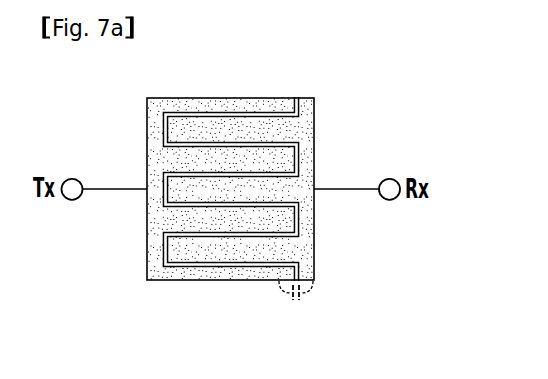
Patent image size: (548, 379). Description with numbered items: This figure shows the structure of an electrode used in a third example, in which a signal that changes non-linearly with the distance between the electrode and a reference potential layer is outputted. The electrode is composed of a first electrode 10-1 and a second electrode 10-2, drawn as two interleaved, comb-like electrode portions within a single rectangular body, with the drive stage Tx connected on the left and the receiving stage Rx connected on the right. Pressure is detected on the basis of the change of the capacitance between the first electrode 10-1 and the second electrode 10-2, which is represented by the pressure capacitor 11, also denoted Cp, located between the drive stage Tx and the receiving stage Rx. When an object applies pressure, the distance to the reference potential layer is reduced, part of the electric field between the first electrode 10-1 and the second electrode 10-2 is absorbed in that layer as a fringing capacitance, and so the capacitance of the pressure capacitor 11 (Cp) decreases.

The first electrode 10-1 is at (147, 115).
The second electrode 10-2 is at (314, 127).
The pressure capacitor 11 is at (293, 301).
The pressure capacitor Cp is at (305, 295).